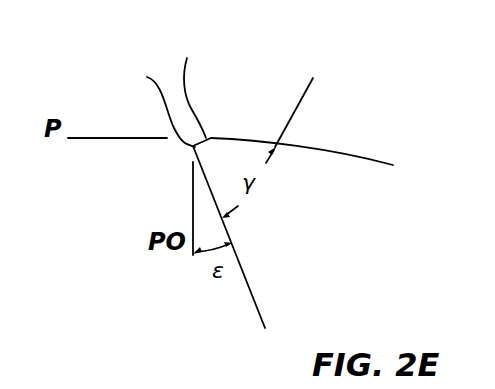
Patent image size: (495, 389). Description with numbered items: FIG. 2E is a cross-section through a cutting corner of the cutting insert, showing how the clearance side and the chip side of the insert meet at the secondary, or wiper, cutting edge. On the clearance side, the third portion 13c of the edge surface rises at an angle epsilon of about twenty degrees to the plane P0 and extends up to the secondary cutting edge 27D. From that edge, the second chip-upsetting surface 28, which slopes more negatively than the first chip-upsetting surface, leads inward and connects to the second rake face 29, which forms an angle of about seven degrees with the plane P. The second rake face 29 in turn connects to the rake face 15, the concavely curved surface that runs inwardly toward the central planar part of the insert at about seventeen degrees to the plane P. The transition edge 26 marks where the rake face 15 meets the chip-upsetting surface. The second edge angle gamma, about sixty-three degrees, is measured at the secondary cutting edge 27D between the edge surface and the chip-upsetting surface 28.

The secondary cutting edge 27D is at (154, 99).
The second chip-upsetting surface 28 is at (192, 86).
The transition edge 26 is at (208, 138).
The second rake face 29 is at (305, 100).
The rake face 15 is at (383, 160).
The third portion of the edge surface 13c is at (250, 292).